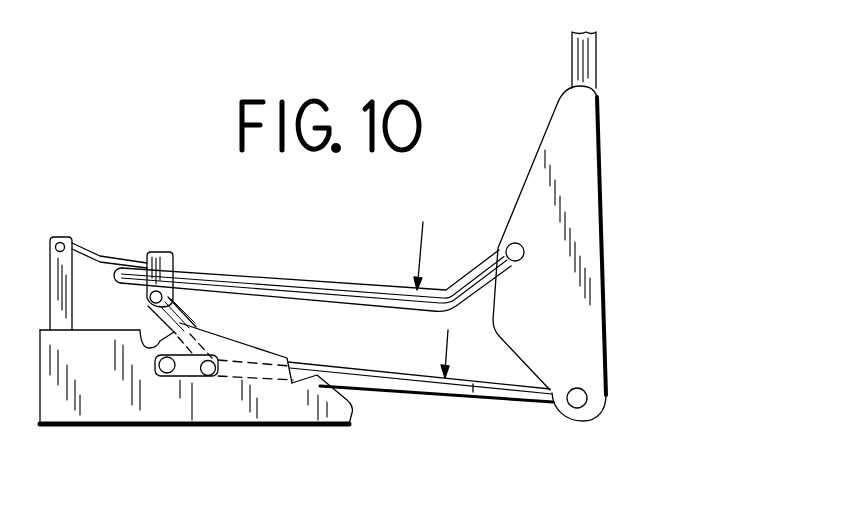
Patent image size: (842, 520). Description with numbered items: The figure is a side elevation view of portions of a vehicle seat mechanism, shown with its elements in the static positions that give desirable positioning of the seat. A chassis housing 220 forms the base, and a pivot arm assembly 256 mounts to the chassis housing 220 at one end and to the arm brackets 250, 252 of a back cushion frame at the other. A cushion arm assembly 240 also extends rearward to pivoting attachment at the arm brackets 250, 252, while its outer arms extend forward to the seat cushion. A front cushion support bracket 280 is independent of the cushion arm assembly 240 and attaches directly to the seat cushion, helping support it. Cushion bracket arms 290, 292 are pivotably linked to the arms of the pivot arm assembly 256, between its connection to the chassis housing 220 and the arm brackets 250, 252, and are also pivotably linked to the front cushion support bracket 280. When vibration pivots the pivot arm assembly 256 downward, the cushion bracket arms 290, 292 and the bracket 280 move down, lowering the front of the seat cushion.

The chassis housing 220 is at (187, 413).
The cushion arm assembly 240 is at (282, 287).
The arm bracket 250 is at (612, 226).
The arm bracket 252 is at (584, 60).
The pivot arm assembly 256 is at (473, 392).
The front cushion support bracket 280 is at (172, 253).
The cushion bracket arm 290 is at (241, 340).
The cushion bracket arm 292 is at (187, 311).